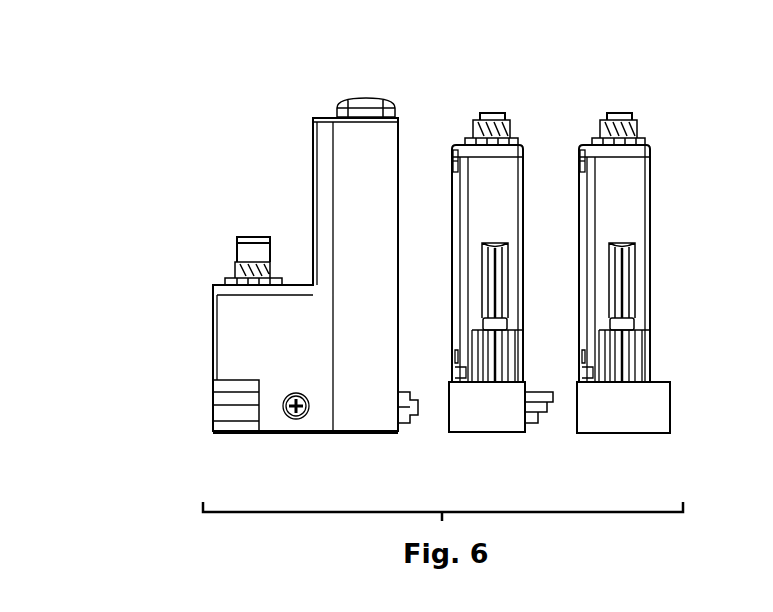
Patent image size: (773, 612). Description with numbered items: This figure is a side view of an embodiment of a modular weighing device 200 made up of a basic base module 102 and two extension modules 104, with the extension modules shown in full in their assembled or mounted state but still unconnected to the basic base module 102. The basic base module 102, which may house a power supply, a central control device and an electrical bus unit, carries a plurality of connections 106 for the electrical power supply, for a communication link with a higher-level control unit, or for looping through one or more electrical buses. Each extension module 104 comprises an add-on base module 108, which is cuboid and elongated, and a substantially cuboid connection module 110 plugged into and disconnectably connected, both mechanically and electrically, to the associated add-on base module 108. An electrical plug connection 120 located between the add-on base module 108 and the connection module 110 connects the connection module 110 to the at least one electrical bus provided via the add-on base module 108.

The basic base module 102 is at (311, 127).
The extension module 104 is at (522, 137).
The connections 106 is at (250, 253).
The add-on base module 108 is at (492, 418).
The connection module 110 is at (512, 215).
The electrical plug connection 120 is at (657, 377).
The modular weighing device 200 is at (502, 80).